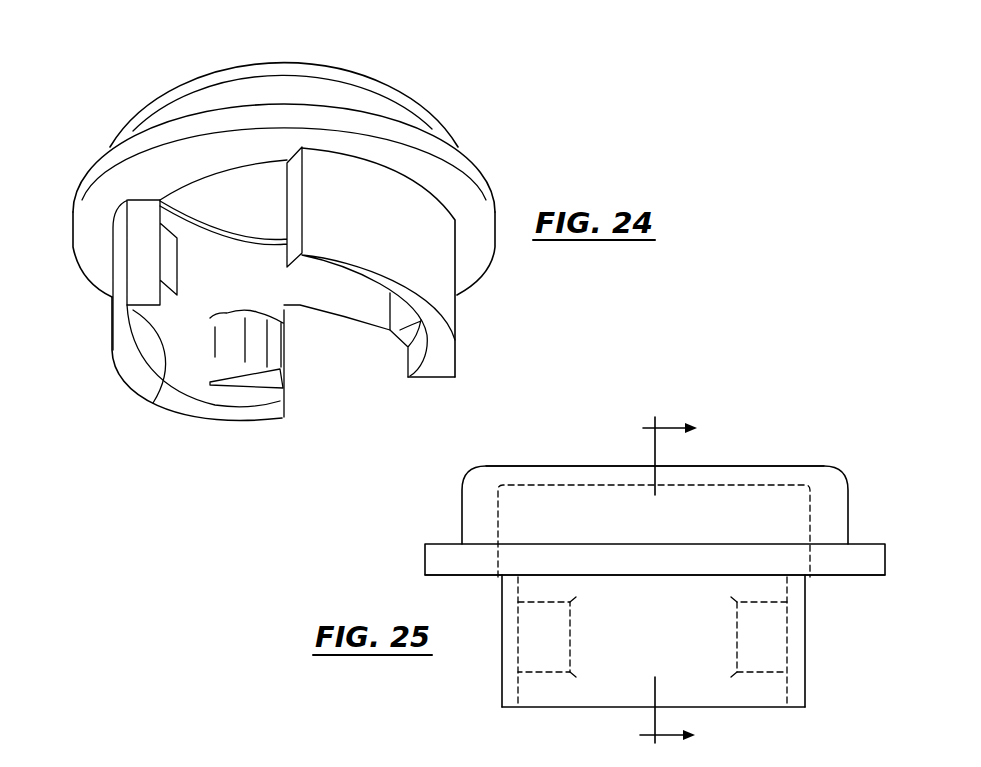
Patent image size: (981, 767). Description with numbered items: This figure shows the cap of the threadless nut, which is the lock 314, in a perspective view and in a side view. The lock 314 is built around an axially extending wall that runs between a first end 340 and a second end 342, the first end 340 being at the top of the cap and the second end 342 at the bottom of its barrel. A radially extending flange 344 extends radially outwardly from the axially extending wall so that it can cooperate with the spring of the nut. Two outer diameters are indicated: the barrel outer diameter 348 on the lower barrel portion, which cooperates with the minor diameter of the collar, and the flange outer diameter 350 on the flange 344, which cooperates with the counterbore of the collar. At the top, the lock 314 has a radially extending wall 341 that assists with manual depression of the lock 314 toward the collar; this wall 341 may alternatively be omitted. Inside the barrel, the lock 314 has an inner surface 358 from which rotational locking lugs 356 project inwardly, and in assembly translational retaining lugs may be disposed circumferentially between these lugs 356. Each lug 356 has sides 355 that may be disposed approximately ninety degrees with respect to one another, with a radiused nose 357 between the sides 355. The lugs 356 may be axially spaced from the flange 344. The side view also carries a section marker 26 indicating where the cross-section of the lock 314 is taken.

In FIG. 24, the lock 314 is at (416, 72).
In FIG. 24, the first end 340 is at (118, 137).
In FIG. 25, the first end 340 is at (822, 463).
In FIG. 24, the radially extending wall 341 is at (332, 65).
In FIG. 25, the radially extending wall 341 is at (565, 463).
In FIG. 24, the second end 342 is at (132, 372).
In FIG. 25, the second end 342 is at (807, 707).
In FIG. 24, the radially extending flange 344 is at (73, 222).
In FIG. 25, the radially extending flange 344 is at (858, 557).
In FIG. 24, the barrel outer diameter 348 is at (456, 337).
In FIG. 25, the barrel outer diameter 348 is at (502, 635).
In FIG. 24, the flange outer diameter 350 is at (95, 180).
In FIG. 25, the flange outer diameter 350 is at (868, 565).
In FIG. 24, the sides 355 is at (210, 382).
In FIG. 24, the rotational locking lugs 356 is at (228, 297).
In FIG. 25, the rotational locking lugs 356 is at (563, 686).
In FIG. 24, the radiused nose 357 is at (253, 362).
In FIG. 24, the inner surface 358 is at (227, 360).
In FIG. 25, the section line 26- 26 is at (688, 584).